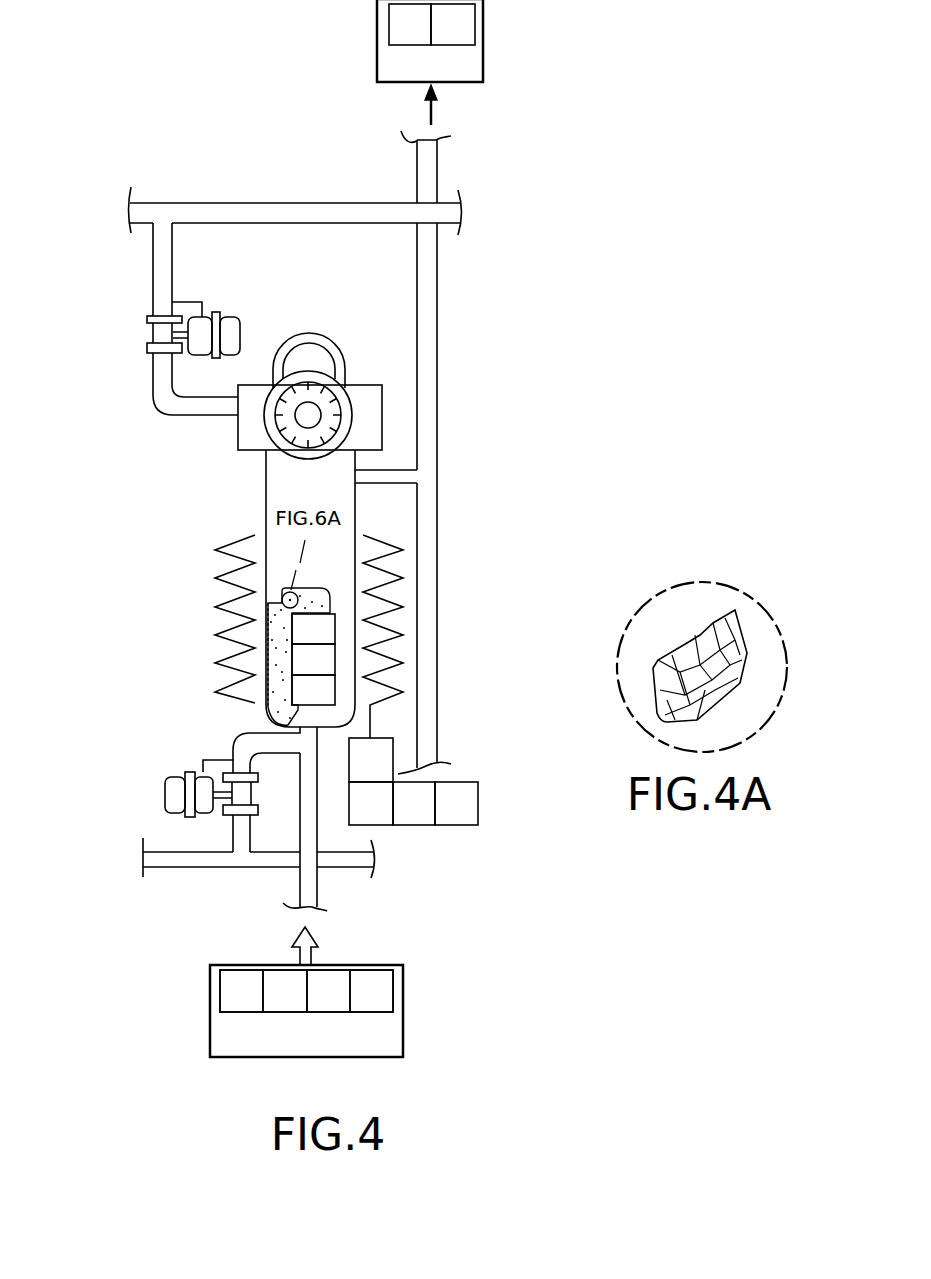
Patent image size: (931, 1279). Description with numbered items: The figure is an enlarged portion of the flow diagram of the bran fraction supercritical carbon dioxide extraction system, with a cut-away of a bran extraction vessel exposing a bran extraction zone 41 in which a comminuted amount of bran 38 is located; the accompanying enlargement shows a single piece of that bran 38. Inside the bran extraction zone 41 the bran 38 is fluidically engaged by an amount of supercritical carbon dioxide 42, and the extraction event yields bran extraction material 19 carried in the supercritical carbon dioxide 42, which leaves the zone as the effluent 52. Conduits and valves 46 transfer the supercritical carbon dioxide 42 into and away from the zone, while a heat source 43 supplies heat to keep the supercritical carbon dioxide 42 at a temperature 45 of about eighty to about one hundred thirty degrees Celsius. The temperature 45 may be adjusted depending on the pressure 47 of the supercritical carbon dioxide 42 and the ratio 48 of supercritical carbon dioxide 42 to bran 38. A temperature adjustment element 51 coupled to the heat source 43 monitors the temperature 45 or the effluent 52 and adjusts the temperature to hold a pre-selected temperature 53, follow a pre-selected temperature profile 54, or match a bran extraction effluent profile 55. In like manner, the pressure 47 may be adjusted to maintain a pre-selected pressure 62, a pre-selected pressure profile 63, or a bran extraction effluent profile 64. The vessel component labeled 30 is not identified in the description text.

In FIG. 4, the bran extraction material 19 is at (453, 24).
In FIG. 4, the housing 30 is at (340, 488).
In FIG. 4, the amount of bran 38 is at (280, 665).
In FIG. 4A, the amount of bran 38 is at (730, 650).
In FIG. 4, the bran extraction zone 41 is at (272, 627).
In FIG. 4, the amount of supercritical carbon dioxide 42 is at (320, 530).
In FIG. 4, the heat source 43 is at (385, 568).
In FIG. 4, the temperature 45 is at (170, 540).
In FIG. 4, the conduits and valves 46 is at (187, 335).
In FIG. 4, the pressure 47 is at (277, 828).
In FIG. 4, the ratio 48 is at (313, 690).
In FIG. 4, the temperature adjustment element 51 is at (371, 760).
In FIG. 4, the effluent 52 is at (430, 41).
In FIG. 4, the pre-selected temperature 53 is at (371, 803).
In FIG. 4, the pre-selected temperature profile 54 is at (414, 803).
In FIG. 4, the bran extraction effluent profile 55 is at (456, 803).
In FIG. 4, the pre-selected pressure 62 is at (285, 991).
In FIG. 4, the pre-selected pressure profile 63 is at (328, 991).
In FIG. 4, the bran extraction effluent profile 64 is at (371, 991).